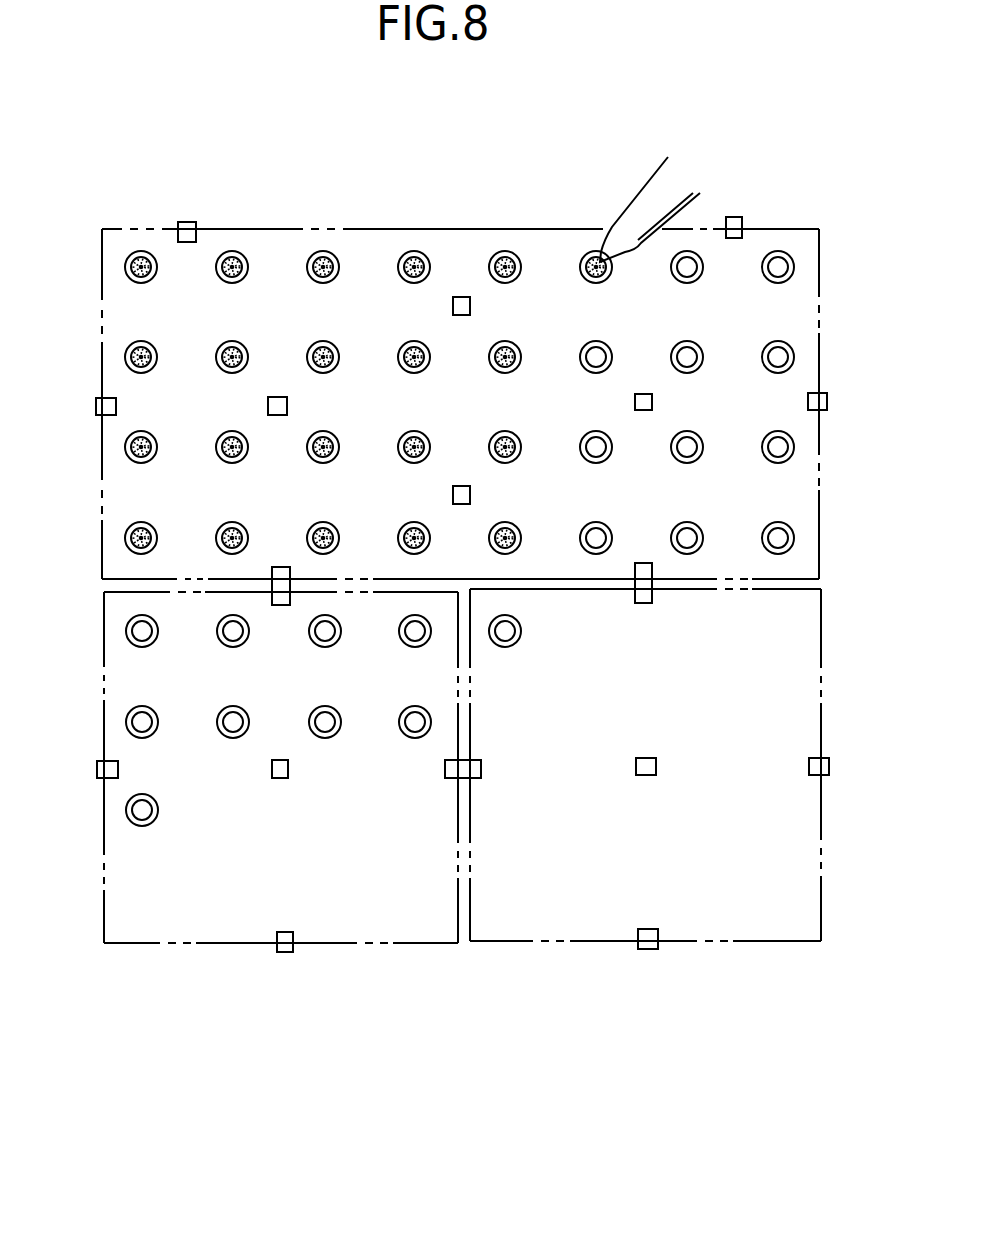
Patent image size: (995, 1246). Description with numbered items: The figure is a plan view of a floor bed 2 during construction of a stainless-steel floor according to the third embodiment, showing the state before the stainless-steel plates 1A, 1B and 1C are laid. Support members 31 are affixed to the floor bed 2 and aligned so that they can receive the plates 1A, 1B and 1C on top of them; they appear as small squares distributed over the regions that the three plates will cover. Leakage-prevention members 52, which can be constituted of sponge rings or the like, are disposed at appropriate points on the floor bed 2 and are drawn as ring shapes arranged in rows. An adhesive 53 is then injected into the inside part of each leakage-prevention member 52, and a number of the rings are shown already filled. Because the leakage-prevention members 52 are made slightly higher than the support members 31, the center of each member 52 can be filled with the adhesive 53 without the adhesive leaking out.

The stainless-steel plate 1A is at (386, 218).
The stainless-steel plate 1B is at (771, 955).
The stainless-steel plate 1C is at (412, 956).
The floor bed 2 is at (525, 1000).
The support member 31 is at (187, 223).
The leakage-prevention member 52 is at (586, 255).
The adhesive 53 is at (592, 279).